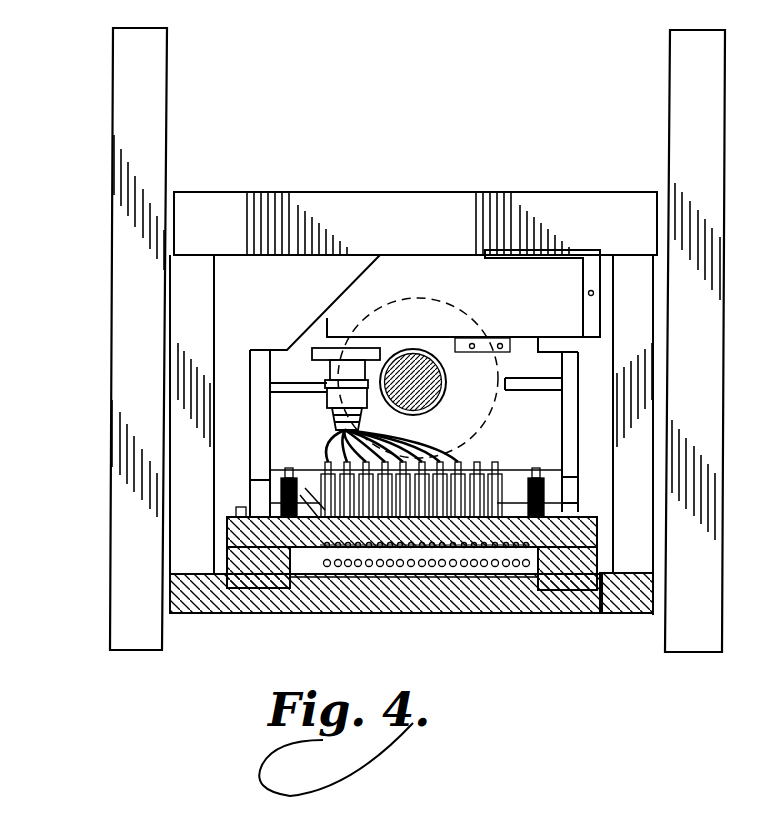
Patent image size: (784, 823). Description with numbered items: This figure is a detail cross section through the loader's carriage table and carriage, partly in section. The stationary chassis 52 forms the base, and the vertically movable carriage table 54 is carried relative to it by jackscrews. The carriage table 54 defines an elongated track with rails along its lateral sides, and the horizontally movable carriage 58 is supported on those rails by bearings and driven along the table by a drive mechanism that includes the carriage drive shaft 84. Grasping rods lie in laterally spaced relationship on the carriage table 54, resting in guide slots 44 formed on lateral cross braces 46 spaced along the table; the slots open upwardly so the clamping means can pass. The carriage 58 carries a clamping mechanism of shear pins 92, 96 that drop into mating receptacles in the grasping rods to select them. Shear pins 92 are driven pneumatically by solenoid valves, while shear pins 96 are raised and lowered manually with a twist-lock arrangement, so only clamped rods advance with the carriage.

The guide slots 44 is at (373, 562).
The lateral cross braces 46 is at (458, 604).
The chassis 52 is at (707, 572).
The carriage table 54 is at (605, 604).
The carriage 58 is at (583, 531).
The carriage drive shaft 84 is at (410, 354).
The shear pins 92 is at (465, 456).
The shear pins 96 is at (497, 470).